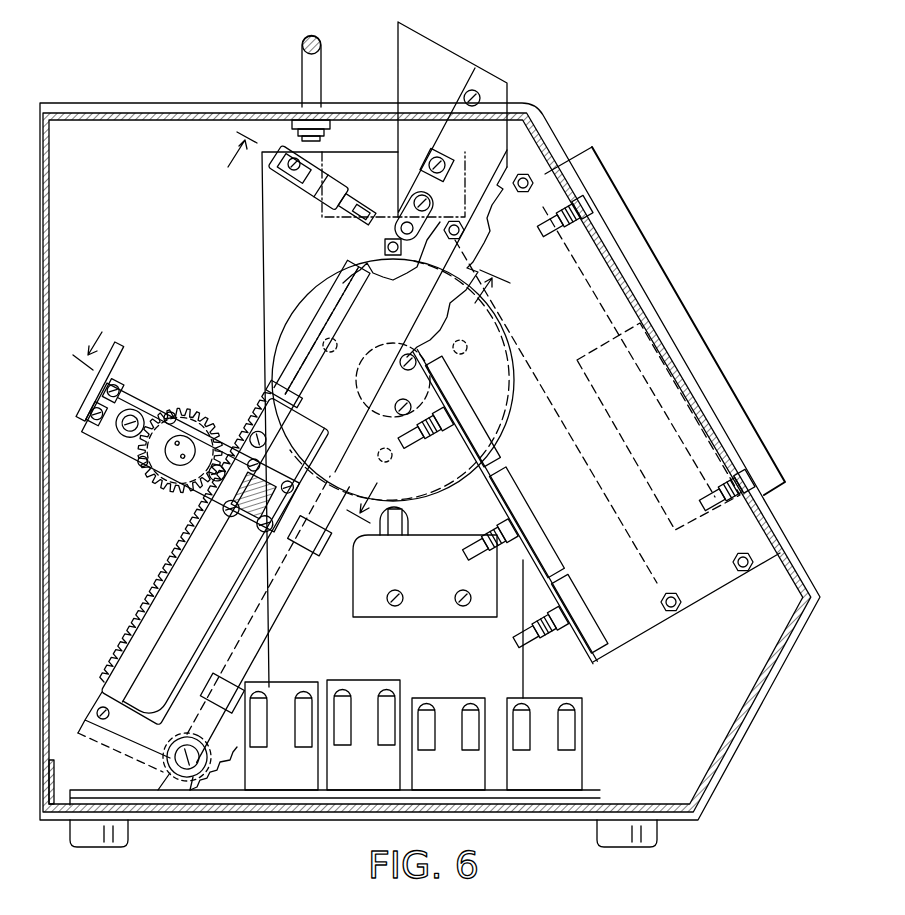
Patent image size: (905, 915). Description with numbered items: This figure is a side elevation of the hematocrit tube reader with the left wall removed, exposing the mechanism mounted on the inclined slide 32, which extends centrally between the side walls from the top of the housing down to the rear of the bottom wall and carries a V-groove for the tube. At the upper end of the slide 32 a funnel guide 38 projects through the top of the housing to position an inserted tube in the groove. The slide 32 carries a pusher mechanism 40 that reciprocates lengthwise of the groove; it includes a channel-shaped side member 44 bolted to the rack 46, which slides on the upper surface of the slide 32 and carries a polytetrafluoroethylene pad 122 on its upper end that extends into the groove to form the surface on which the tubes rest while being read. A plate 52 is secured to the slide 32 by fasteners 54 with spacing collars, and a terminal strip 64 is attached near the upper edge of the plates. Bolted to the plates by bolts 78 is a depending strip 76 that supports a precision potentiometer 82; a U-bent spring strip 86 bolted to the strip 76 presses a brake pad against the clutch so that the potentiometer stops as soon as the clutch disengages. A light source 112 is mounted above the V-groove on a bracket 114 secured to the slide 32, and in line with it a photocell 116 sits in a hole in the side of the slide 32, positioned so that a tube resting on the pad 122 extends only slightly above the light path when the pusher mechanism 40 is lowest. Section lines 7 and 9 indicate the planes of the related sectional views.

The section line 7- 7 is at (234, 419).
The section line 9- 9 is at (366, 229).
The inclined slide 32 is at (93, 773).
The funnel guide 38 is at (445, 70).
The pusher mechanism 40 is at (103, 696).
The side member 44 is at (112, 730).
The rack 46 is at (133, 618).
The plate 52 is at (104, 438).
The fastener 54 is at (240, 541).
The terminal strip 64 is at (88, 420).
The depending strip 76 is at (153, 415).
The bolt 78 is at (128, 436).
The precision potentiometer 82 is at (190, 445).
The spring strip 86 is at (233, 493).
The light source 112 is at (318, 196).
The bracket 114 is at (300, 160).
The photocell 116 is at (398, 229).
The polytetrafluoroethylene pad 122 is at (275, 392).